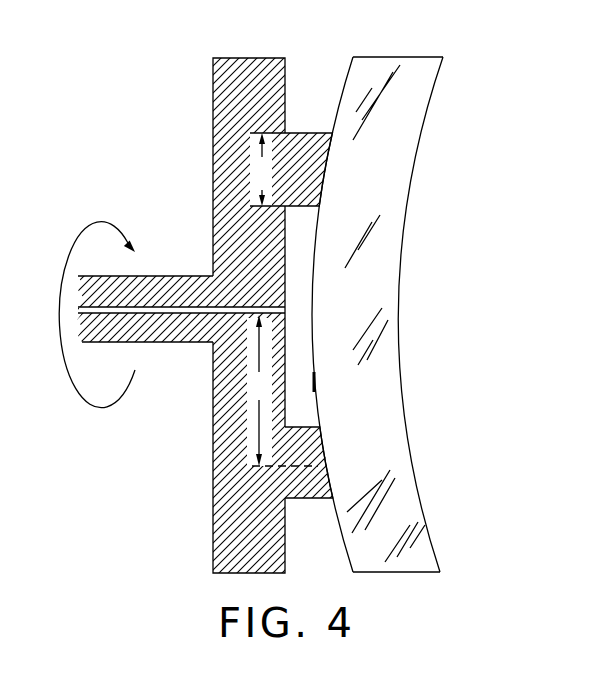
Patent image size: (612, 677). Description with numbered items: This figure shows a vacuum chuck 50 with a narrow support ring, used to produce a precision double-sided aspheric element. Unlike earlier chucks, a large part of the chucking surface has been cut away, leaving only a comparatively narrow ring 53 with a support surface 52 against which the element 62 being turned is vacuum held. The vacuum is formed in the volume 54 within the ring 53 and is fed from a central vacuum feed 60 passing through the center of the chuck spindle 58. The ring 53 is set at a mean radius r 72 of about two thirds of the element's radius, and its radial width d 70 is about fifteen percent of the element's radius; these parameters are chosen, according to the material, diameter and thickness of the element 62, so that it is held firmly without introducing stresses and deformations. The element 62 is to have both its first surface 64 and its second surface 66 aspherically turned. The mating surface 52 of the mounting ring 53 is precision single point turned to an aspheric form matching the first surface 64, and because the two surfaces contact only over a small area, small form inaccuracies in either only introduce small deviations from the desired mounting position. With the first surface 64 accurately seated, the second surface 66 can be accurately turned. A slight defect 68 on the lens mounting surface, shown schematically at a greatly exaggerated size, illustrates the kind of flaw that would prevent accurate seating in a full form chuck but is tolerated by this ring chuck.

The vacuum chuck 50 is at (236, 62).
The support surface 52 is at (318, 487).
The narrow ring 53 is at (297, 143).
The volume within the ring 54 is at (300, 223).
The chuck spindle 58 is at (172, 338).
The central vacuum feed 60 is at (78, 313).
The element 62 is at (397, 121).
The first surface 64 is at (312, 298).
The second surface 66 is at (398, 312).
The defect 68 is at (312, 380).
The ring radial width d 70 is at (257, 153).
The mean radius r 72 is at (252, 447).